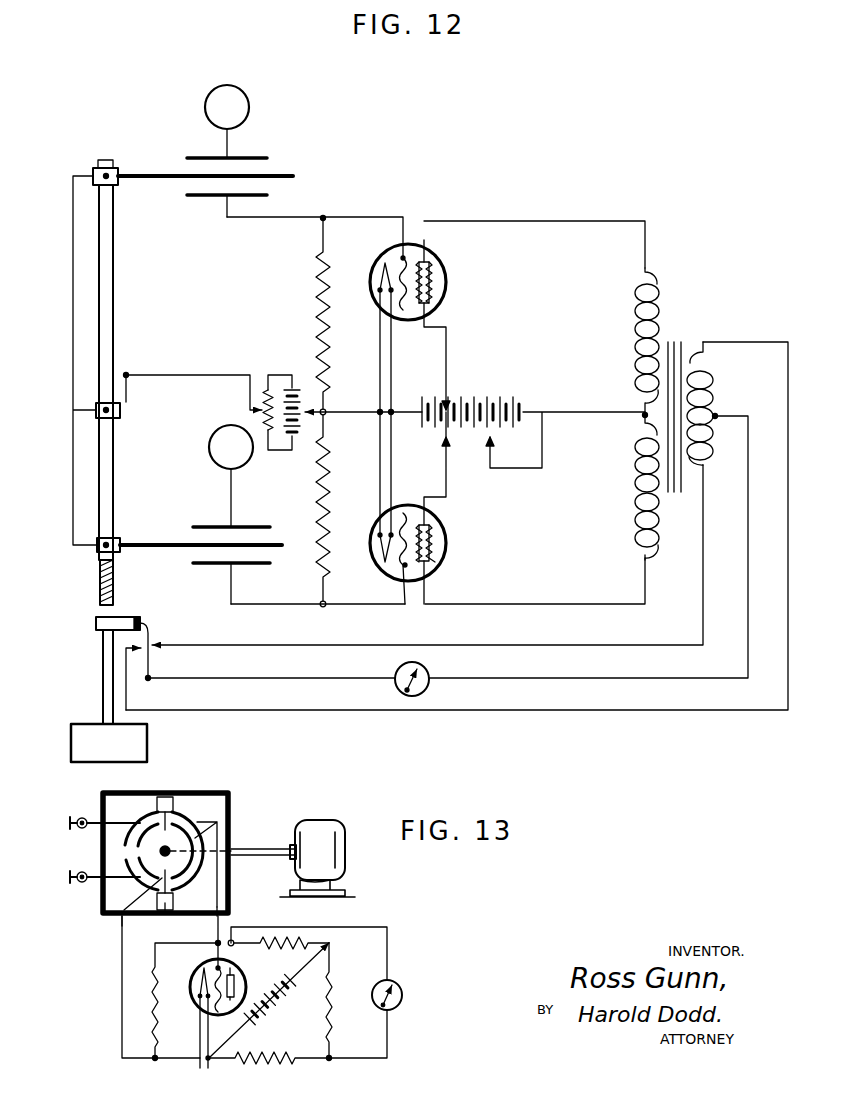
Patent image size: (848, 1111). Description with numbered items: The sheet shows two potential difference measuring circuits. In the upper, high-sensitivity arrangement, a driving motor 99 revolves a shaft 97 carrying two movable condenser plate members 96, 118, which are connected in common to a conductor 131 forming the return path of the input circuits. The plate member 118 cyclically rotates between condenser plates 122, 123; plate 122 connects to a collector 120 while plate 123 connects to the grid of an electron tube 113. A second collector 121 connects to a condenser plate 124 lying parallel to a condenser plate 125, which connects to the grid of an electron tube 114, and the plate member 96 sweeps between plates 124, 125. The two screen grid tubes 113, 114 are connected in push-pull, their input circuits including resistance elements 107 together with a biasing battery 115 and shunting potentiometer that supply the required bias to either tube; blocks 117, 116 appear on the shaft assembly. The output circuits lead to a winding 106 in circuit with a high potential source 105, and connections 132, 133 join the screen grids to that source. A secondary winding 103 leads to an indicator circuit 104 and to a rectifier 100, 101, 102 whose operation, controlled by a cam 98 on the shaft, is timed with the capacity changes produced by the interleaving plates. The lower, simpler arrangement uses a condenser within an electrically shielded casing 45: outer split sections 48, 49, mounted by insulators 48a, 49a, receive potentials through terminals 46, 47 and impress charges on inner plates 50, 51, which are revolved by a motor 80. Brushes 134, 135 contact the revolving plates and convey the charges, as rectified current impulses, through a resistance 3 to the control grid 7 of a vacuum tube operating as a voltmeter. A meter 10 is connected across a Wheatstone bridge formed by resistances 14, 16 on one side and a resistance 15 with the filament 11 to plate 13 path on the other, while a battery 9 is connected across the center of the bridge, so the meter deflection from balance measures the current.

In FIG. 12, the collector 120 is at (232, 103).
In FIG. 12, the movable condenser plate member 118 is at (134, 171).
In FIG. 12, the condenser plate 122 is at (258, 157).
In FIG. 12, the condenser plate 123 is at (250, 197).
In FIG. 12, the conductor 131 is at (70, 308).
In FIG. 12, the resistance elements 107 is at (318, 290).
In FIG. 12, the electron tube 113 is at (447, 270).
In FIG. 12, the connection 133 is at (433, 301).
In FIG. 12, the biasing battery 115 is at (278, 384).
In FIG. 12, the high potential source 105 is at (482, 386).
In FIG. 12, the winding 106 is at (634, 352).
In FIG. 12, the secondary winding 103 is at (708, 392).
In FIG. 12, the contact block 117 is at (125, 403).
In FIG. 12, the rod 116 is at (110, 422).
In FIG. 12, the collector 121 is at (223, 458).
In FIG. 12, the condenser plate 124 is at (268, 514).
In FIG. 12, the movable condenser plate member 96 is at (170, 533).
In FIG. 12, the connection 132 is at (440, 521).
In FIG. 12, the electron tube 114 is at (448, 564).
In FIG. 12, the condenser plate 125 is at (244, 566).
In FIG. 12, the cam 98 is at (96, 622).
In FIG. 12, the rectifier 100 is at (145, 623).
In FIG. 12, the rectifier 101 is at (160, 645).
In FIG. 12, the rectifier 102 is at (125, 684).
In FIG. 12, the shaft 97 is at (100, 674).
In FIG. 12, the driving motor 99 is at (78, 746).
In FIG. 12, the indicator circuit 104 is at (431, 678).
In FIG. 13, the electrically shielded casing 45 is at (232, 803).
In FIG. 13, the condenser plate 50 is at (153, 799).
In FIG. 13, the condenser plate 48 is at (188, 822).
In FIG. 13, the insulator 48a is at (176, 824).
In FIG. 13, the brush 134 is at (208, 790).
In FIG. 13, the condenser plate 51 is at (190, 857).
In FIG. 13, the condenser plate 49 is at (208, 878).
In FIG. 13, the terminal 46 is at (78, 818).
In FIG. 13, the terminal 47 is at (78, 884).
In FIG. 13, the brush 135 is at (162, 890).
In FIG. 13, the insulator 49a is at (167, 902).
In FIG. 13, the motor 80 is at (322, 832).
In FIG. 13, the resistance 3 is at (150, 1007).
In FIG. 13, the control grid 7 is at (200, 985).
In FIG. 13, the filament 11 is at (203, 996).
In FIG. 13, the plate 13 is at (236, 977).
In FIG. 13, the resistance 16 is at (298, 936).
In FIG. 13, the resistance 14 is at (337, 990).
In FIG. 13, the meter 10 is at (398, 982).
In FIG. 13, the resistance 15 is at (285, 1063).
In FIG. 13, the battery 9 is at (278, 1013).